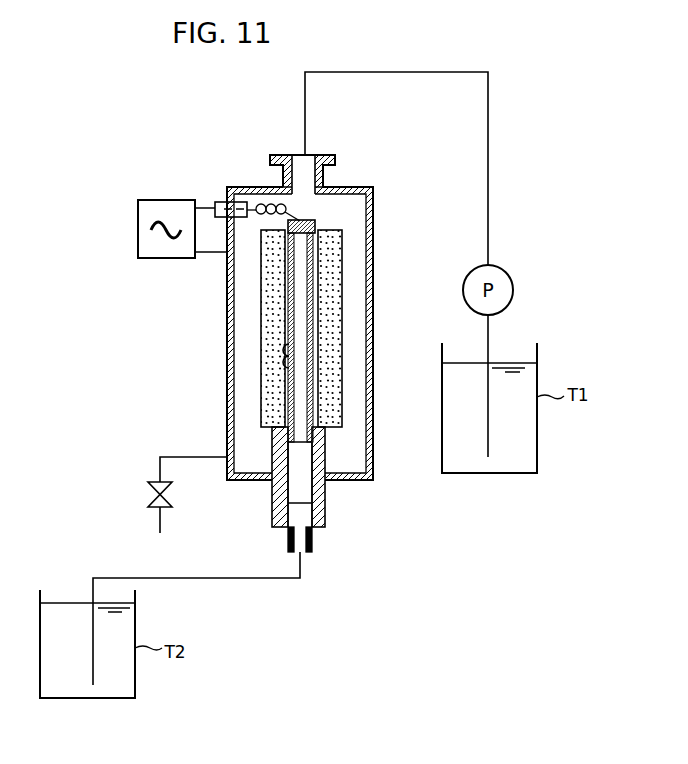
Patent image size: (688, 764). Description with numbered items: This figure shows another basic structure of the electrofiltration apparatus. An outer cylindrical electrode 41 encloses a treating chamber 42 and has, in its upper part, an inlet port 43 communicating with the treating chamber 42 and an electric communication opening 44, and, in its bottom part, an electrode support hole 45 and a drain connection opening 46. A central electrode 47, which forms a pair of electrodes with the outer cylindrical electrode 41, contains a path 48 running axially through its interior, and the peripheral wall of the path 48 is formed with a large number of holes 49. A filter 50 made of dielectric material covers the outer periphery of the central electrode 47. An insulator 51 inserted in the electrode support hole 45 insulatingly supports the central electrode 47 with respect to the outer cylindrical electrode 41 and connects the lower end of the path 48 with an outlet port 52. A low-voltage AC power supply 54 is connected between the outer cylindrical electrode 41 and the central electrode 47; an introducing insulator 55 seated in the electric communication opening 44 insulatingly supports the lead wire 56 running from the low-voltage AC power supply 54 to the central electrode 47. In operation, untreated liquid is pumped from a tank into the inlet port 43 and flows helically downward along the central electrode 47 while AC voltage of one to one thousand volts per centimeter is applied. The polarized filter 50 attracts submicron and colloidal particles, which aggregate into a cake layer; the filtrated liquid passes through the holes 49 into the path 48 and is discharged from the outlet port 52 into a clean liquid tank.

The outer cylindrical electrode 41 is at (369, 253).
The treating chamber 42 is at (357, 220).
The inlet port 43 is at (312, 160).
The electric communication opening 44 is at (231, 218).
The electrode support hole 45 is at (272, 487).
The drain connection opening 46 is at (223, 462).
The central electrode 47 is at (316, 343).
The path 48 is at (303, 396).
The holes 49 is at (288, 356).
The filter 50 is at (333, 291).
The insulator 51 is at (325, 488).
The outlet port 52 is at (312, 540).
The low-voltage AC power supply 54 is at (160, 200).
The introducing insulator 55 is at (222, 202).
The lead wire 56 is at (303, 220).